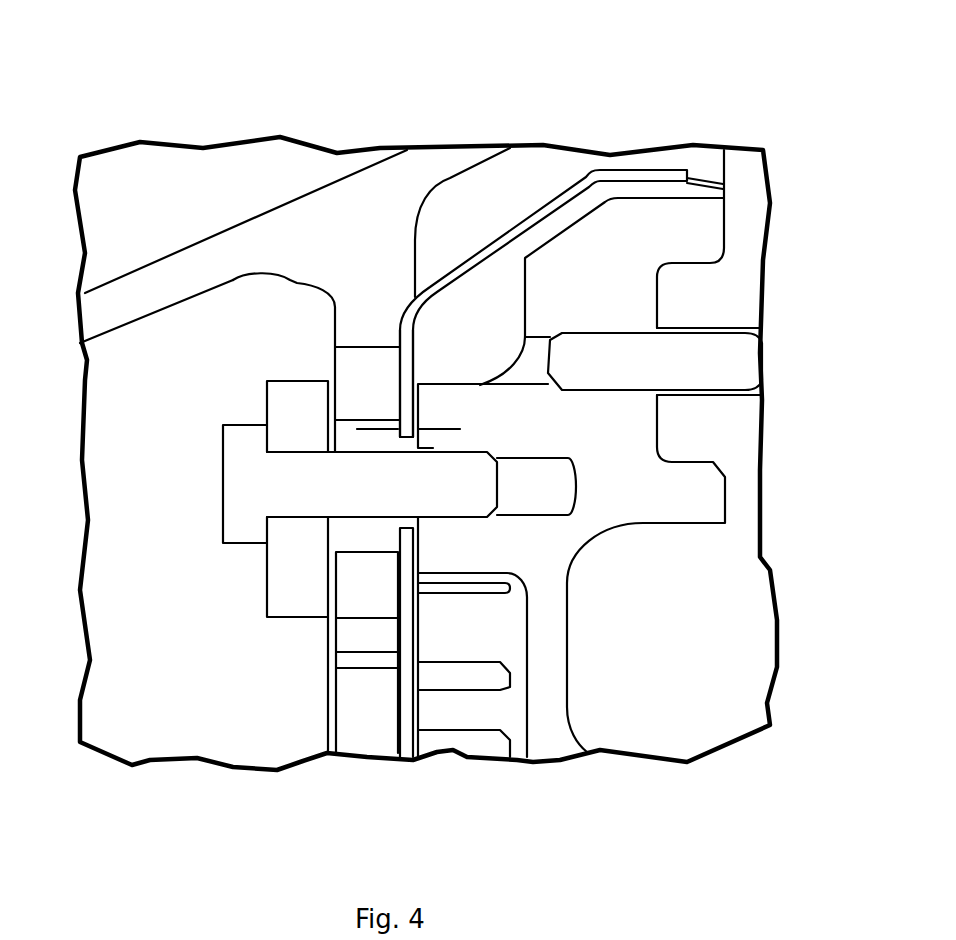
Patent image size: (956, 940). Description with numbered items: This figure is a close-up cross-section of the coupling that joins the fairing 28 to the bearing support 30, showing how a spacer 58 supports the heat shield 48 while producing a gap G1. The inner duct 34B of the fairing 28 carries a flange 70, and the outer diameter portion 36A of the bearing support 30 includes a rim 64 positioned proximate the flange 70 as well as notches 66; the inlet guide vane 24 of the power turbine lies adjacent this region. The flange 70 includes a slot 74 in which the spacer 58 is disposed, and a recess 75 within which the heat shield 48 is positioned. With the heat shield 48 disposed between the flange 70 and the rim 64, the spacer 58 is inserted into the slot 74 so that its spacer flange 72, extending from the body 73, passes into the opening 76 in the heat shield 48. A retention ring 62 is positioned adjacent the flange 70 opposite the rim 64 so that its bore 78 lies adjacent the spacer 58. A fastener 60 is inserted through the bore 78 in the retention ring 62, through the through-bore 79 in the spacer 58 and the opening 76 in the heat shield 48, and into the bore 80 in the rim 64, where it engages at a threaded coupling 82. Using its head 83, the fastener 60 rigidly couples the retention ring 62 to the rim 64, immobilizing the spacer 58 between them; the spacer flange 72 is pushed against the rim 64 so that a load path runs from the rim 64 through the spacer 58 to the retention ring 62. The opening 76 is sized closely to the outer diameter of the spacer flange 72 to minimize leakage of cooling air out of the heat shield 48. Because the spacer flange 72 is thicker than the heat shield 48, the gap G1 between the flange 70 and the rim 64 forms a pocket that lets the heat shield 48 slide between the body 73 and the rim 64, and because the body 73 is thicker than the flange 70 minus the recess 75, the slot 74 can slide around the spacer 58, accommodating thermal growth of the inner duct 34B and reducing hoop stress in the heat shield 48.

The fairing 28 is at (414, 170).
The inner duct 34B is at (185, 277).
The flange 70 is at (373, 312).
The slot 74 is at (370, 380).
The heat shield 48 is at (540, 217).
The recess 75 is at (408, 308).
The inlet guide vane 24 is at (715, 300).
The threaded coupling 82 is at (727, 475).
The rim 64 is at (673, 498).
The outer diameter portion 36A is at (548, 675).
The spacer flange 72 is at (466, 428).
The gap G1 is at (448, 428).
The fastener 60 is at (376, 494).
The bore 78 is at (300, 527).
The head 83 is at (240, 443).
The through-bore 79 is at (353, 517).
The retention ring 62 is at (280, 593).
The spacer 58 is at (372, 545).
The body 73 is at (330, 518).
The opening 76 is at (417, 527).
The bore 80 is at (538, 503).
The notches 66 is at (457, 682).
The bearing support 30 is at (585, 772).